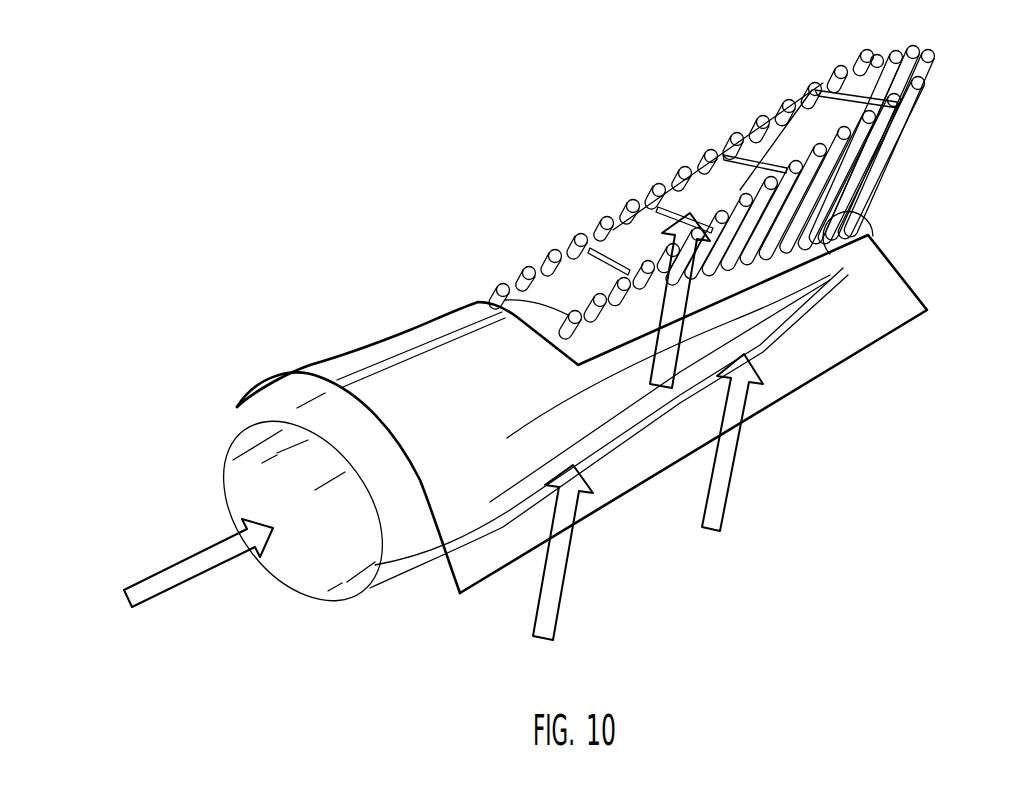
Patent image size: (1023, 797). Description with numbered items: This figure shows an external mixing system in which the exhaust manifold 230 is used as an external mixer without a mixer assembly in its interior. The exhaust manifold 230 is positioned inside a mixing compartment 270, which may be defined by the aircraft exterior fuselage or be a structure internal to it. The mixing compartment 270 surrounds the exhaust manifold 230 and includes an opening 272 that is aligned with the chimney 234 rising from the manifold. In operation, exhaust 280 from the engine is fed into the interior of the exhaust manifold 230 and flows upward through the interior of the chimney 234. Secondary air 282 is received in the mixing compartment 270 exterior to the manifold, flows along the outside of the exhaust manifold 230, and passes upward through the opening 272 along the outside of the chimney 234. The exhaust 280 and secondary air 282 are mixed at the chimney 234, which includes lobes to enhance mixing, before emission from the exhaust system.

The exhaust manifold 230 is at (227, 457).
The chimney 234 is at (723, 147).
The mixing compartment 270 is at (873, 327).
The opening 272 is at (857, 236).
The exhaust 280 is at (142, 580).
The secondary air 282 is at (558, 611).